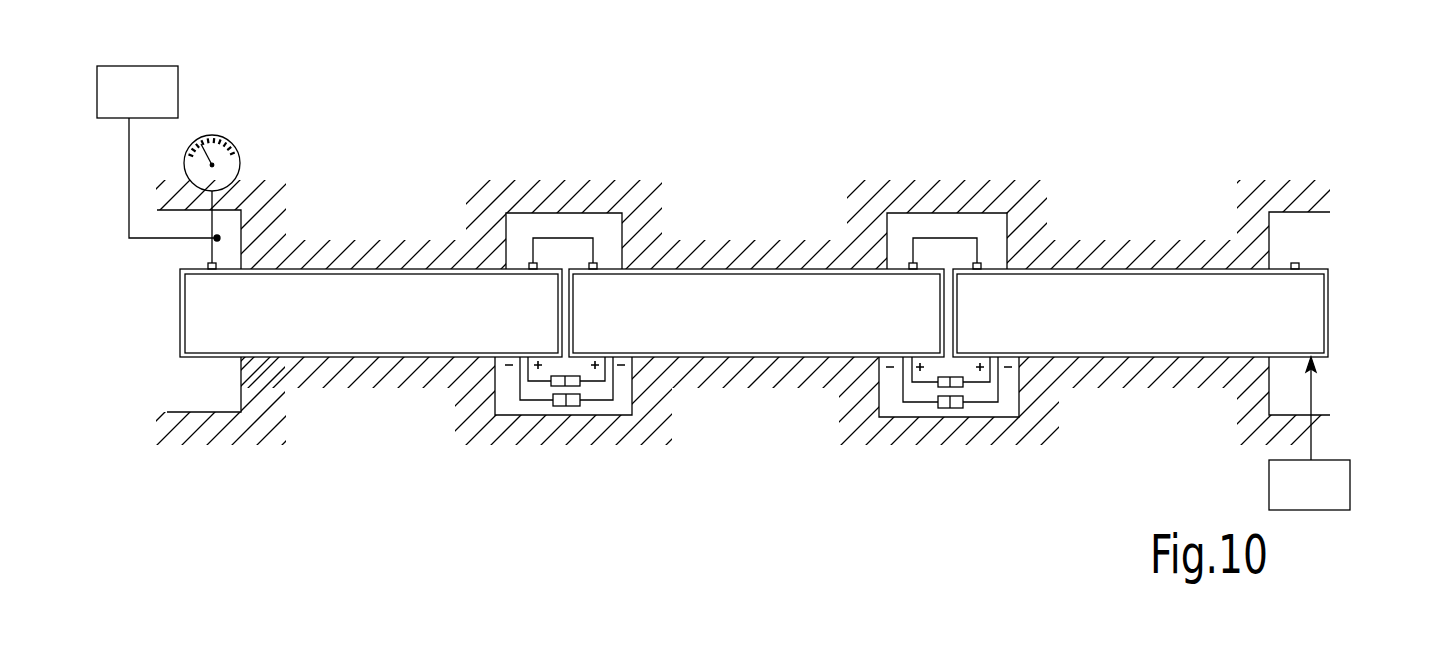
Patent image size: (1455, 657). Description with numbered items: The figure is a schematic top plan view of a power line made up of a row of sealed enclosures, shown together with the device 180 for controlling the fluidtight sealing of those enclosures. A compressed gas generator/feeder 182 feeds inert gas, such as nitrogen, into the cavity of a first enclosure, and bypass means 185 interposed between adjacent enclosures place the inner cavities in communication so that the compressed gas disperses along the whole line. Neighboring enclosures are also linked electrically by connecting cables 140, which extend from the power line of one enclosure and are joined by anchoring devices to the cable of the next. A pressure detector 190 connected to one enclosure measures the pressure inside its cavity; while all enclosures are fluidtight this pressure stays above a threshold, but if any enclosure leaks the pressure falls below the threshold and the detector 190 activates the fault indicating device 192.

The connecting cable 140 is at (523, 382).
The device for controlling fluidtight sealing 180 is at (1360, 370).
The compressed gas generator/feeder 182 is at (1288, 480).
The bypass means 185 is at (557, 237).
The pressure detector 190 is at (247, 162).
The fault indicating device 192 is at (168, 98).